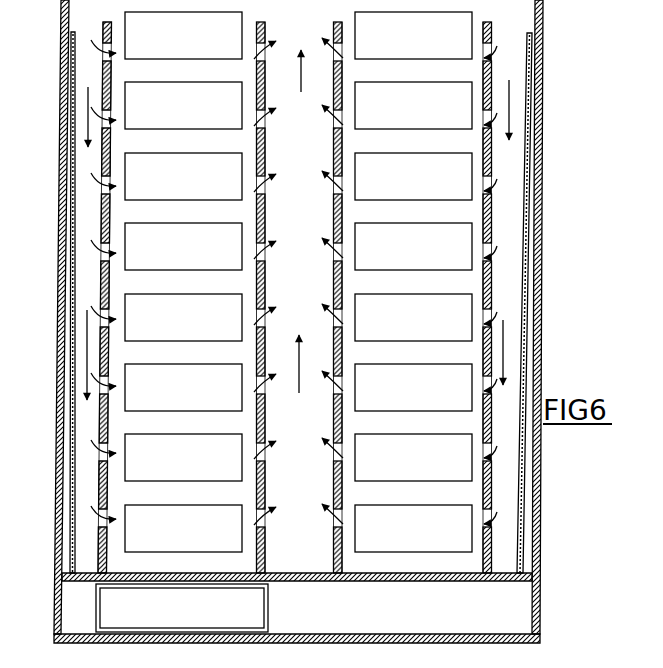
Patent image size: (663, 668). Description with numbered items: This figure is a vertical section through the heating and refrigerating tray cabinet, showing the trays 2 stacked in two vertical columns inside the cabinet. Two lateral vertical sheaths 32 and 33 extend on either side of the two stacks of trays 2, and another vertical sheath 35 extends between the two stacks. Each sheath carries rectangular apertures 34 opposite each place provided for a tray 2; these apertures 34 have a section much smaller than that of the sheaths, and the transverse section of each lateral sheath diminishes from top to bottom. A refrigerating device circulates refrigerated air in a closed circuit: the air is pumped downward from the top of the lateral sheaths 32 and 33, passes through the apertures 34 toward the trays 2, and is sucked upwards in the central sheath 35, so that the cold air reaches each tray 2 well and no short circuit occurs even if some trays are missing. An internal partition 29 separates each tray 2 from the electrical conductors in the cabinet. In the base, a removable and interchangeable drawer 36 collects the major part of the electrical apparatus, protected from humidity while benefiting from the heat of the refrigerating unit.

The tray 2 is at (298, 282).
The internal partition 29 is at (100, 213).
The lateral vertical sheath 32 is at (87, 270).
The lateral vertical sheath 33 is at (512, 207).
The rectangular aperture 34 is at (520, 65).
The central vertical sheath 35 is at (284, 206).
The drawer 36 is at (158, 617).